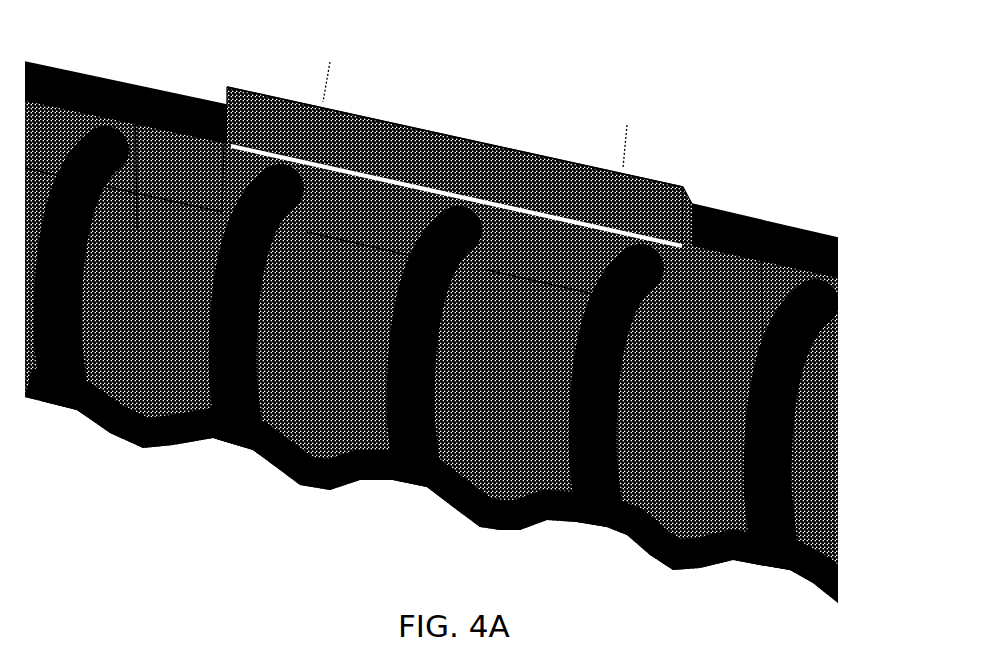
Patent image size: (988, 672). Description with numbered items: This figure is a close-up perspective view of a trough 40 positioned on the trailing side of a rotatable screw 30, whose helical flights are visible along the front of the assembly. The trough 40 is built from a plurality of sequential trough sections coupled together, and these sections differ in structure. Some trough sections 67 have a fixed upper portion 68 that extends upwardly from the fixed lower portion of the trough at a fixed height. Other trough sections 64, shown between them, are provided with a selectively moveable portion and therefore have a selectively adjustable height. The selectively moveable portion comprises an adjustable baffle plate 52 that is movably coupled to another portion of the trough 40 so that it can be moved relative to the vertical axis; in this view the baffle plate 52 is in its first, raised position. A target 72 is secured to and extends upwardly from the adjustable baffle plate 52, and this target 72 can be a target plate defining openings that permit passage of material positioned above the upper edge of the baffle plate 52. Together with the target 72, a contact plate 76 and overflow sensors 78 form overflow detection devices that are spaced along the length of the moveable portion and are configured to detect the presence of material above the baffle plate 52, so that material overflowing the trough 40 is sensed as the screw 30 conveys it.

The rotatable screw 30 is at (833, 300).
The trough 40 is at (730, 204).
The adjustable baffle plate 52 is at (235, 155).
The trough sections 64 is at (155, 88).
The trough sections 67 is at (57, 70).
The fixed upper portion 68 is at (93, 88).
The target 72 is at (483, 142).
The contact plate 76 is at (423, 128).
The overflow sensor 78 is at (323, 102).